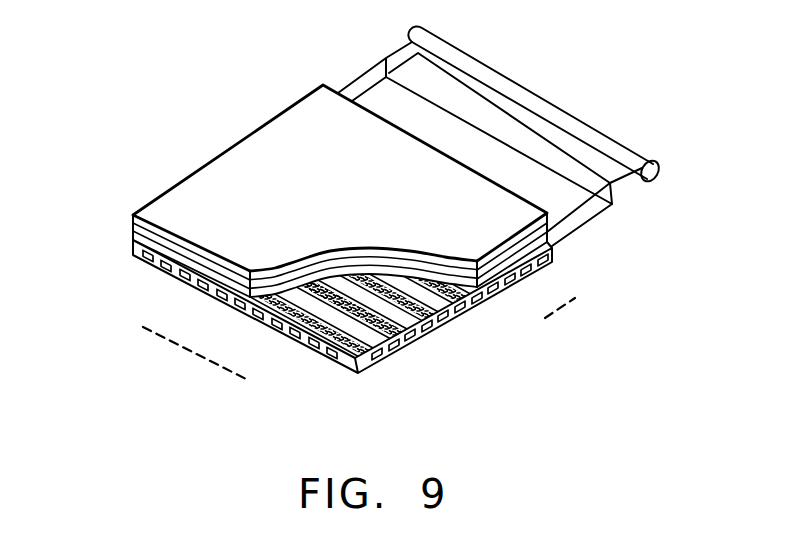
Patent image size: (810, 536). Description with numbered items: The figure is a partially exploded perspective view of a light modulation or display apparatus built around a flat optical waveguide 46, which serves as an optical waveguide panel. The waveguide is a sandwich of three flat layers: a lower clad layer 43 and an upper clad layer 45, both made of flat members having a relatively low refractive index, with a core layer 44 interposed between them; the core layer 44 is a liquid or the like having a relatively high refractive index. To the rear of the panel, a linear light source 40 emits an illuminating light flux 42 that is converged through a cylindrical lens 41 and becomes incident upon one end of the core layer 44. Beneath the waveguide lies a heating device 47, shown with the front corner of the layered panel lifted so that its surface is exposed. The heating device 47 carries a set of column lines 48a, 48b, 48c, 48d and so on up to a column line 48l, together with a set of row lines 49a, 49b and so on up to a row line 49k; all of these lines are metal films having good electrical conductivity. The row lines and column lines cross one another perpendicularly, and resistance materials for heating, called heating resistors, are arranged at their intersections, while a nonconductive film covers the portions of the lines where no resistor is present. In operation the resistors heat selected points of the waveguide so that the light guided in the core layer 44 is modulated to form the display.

The linear light source 40 is at (552, 100).
The cylindrical lens 41 is at (388, 58).
The illuminating light flux 42 is at (592, 213).
The clad layer 43 is at (132, 236).
The core layer 44 is at (132, 228).
The clad layer 45 is at (133, 215).
The flat optical waveguide 46 is at (302, 187).
The heating device 47 is at (353, 307).
The column line 48a is at (375, 354).
The column line 48b is at (395, 345).
The column line 48c is at (408, 337).
The column line 48d is at (450, 326).
The column line 48l is at (550, 260).
The row line 49a is at (332, 358).
The row line 49b is at (306, 348).
The row line 49k is at (147, 262).